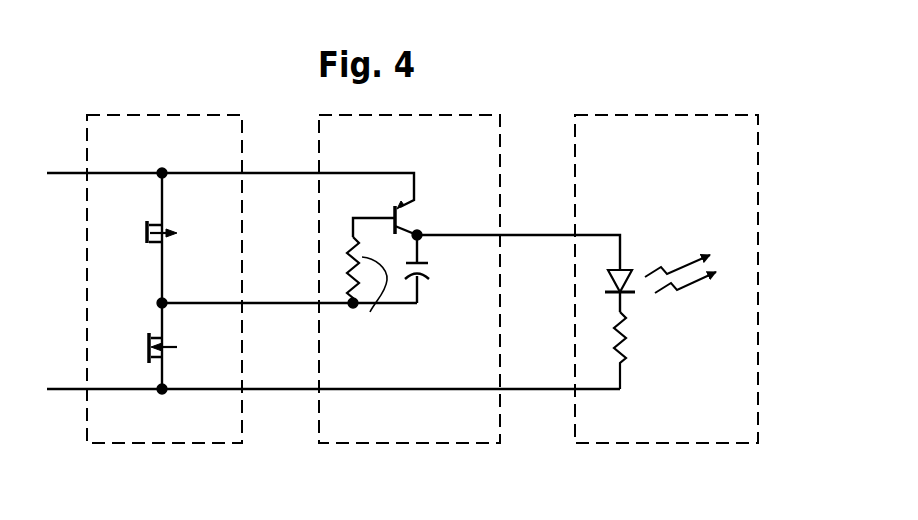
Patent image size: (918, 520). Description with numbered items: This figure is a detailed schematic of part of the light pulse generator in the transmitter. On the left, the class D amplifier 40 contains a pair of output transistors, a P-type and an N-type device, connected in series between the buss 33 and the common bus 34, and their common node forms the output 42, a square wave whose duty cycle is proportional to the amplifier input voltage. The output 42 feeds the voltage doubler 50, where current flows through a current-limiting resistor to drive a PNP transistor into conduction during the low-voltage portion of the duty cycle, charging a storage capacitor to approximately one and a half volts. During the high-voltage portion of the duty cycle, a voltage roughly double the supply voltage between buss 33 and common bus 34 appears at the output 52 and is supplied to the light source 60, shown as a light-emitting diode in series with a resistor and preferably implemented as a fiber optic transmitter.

The buss 33 is at (127, 173).
The common bus 34 is at (108, 389).
The class D amplifier 40 is at (202, 115).
The output 42 is at (297, 302).
The voltage doubler 50 is at (407, 115).
The output 52 is at (535, 233).
The light source 60 is at (655, 115).